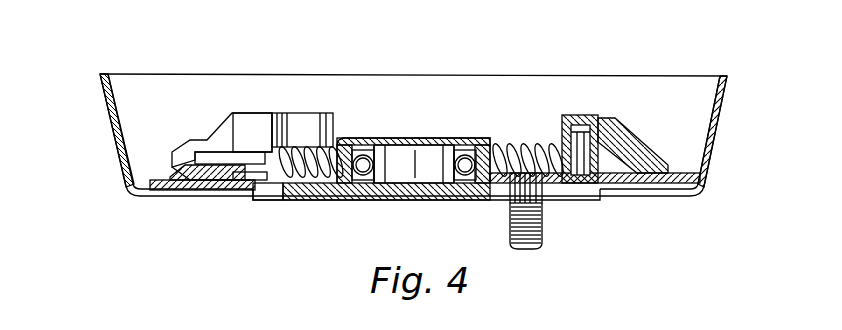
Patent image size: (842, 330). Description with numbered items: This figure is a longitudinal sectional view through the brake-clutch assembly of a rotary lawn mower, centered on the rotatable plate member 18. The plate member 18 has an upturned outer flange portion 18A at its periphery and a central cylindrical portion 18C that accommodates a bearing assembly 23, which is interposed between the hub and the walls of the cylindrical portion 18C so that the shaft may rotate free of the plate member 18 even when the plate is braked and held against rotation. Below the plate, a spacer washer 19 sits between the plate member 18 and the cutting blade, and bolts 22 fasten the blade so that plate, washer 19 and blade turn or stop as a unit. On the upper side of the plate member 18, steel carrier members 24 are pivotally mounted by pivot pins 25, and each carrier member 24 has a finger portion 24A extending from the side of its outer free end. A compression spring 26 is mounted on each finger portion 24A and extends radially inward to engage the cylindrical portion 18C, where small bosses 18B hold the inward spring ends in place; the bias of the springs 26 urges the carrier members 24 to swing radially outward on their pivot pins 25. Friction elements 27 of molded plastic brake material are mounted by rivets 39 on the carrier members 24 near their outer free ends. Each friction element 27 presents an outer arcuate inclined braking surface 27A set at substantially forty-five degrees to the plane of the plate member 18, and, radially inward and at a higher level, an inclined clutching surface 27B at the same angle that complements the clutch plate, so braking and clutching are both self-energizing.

The rotatable plate member 18 is at (172, 190).
The outer flange portion 18A is at (107, 136).
The small bosses 18B is at (468, 140).
The central cylindrical portion 18C is at (340, 140).
The spacer washer 19 is at (288, 196).
The bolts 22 is at (545, 226).
The bearing assembly 23 is at (447, 185).
The carrier members 24 is at (605, 183).
The finger portion 24A is at (301, 147).
The pivot pins 25 is at (234, 180).
The compression springs 26 is at (500, 142).
The friction elements 27 is at (247, 115).
The inclined braking surface 27A is at (172, 150).
The inclined clutching surface 27B is at (222, 118).
The rivets 39 is at (582, 125).